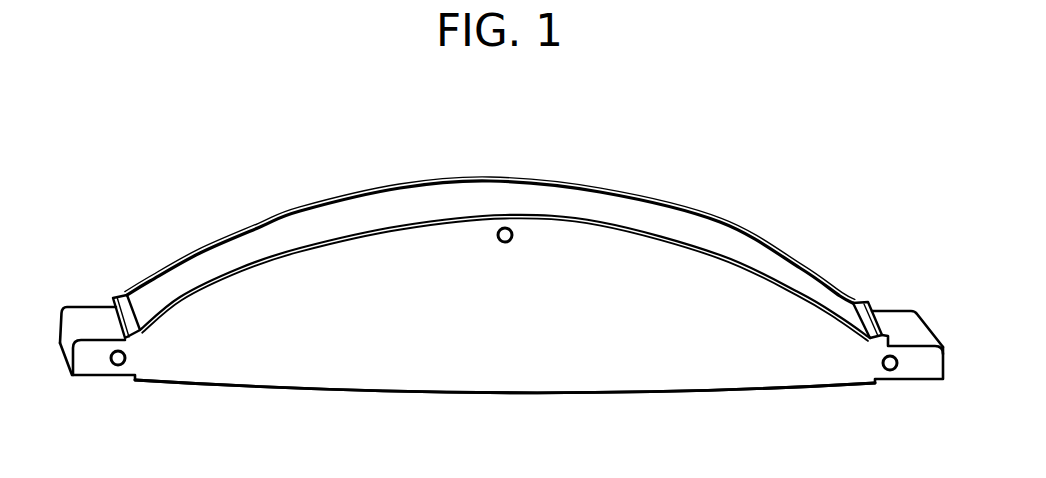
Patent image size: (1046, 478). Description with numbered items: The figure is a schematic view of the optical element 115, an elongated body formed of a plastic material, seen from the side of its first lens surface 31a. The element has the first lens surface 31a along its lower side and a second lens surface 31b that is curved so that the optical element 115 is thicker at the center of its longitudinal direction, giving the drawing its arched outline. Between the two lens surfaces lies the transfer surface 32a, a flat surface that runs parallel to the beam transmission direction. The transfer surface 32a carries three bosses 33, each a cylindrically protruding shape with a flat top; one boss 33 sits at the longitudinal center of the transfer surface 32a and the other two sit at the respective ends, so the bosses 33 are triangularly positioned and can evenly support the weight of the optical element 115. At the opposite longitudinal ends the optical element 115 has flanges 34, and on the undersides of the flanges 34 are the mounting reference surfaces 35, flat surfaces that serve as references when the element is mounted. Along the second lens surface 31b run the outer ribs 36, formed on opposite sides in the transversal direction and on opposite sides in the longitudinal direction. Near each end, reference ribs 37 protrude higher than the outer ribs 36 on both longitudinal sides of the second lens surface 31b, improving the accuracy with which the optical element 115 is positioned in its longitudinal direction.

The optical element 115 is at (490, 226).
The first lens surface 31a is at (493, 394).
The second lens surface 31b is at (500, 192).
The transfer surface 32a is at (362, 384).
The boss 33 is at (126, 358).
The flange 34 is at (70, 317).
The mounting reference surface 35 is at (102, 376).
The outer rib 36 is at (182, 296).
The reference rib 37 is at (112, 297).